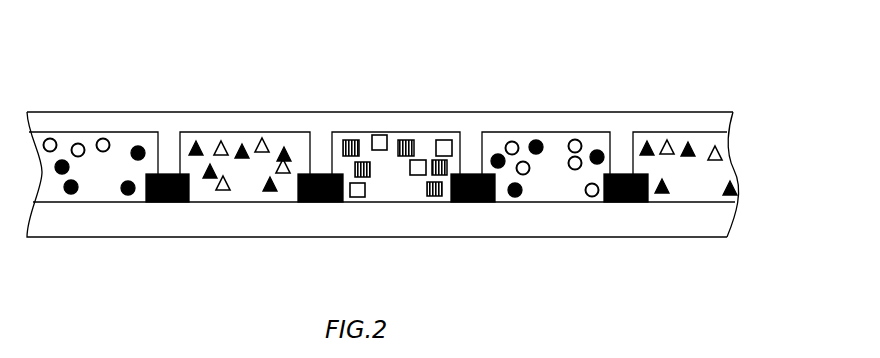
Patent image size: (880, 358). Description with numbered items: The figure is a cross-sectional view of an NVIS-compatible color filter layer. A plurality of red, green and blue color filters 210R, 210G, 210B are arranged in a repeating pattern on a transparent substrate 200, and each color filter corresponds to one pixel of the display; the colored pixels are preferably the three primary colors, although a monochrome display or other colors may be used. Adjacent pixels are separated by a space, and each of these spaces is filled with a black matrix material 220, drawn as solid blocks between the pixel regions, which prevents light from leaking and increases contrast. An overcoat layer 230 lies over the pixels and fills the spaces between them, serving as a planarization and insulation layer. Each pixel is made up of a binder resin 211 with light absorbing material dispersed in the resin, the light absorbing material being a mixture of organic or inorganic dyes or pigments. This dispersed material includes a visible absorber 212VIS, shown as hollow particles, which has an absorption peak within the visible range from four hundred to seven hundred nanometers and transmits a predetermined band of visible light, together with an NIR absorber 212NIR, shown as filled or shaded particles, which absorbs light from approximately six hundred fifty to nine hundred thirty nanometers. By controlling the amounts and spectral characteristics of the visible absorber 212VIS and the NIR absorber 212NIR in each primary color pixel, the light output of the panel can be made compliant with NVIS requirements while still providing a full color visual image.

The transparent substrate 200 is at (735, 220).
The overcoat layer 230 is at (732, 123).
The red color filter 210R is at (548, 132).
The green color filter 210G is at (365, 134).
The blue color filter 210B is at (195, 132).
The binder resin 211 is at (273, 138).
The NIR absorber 212NIR is at (193, 138).
The visible absorber 212VIS is at (220, 138).
The black matrix material 220 is at (622, 175).